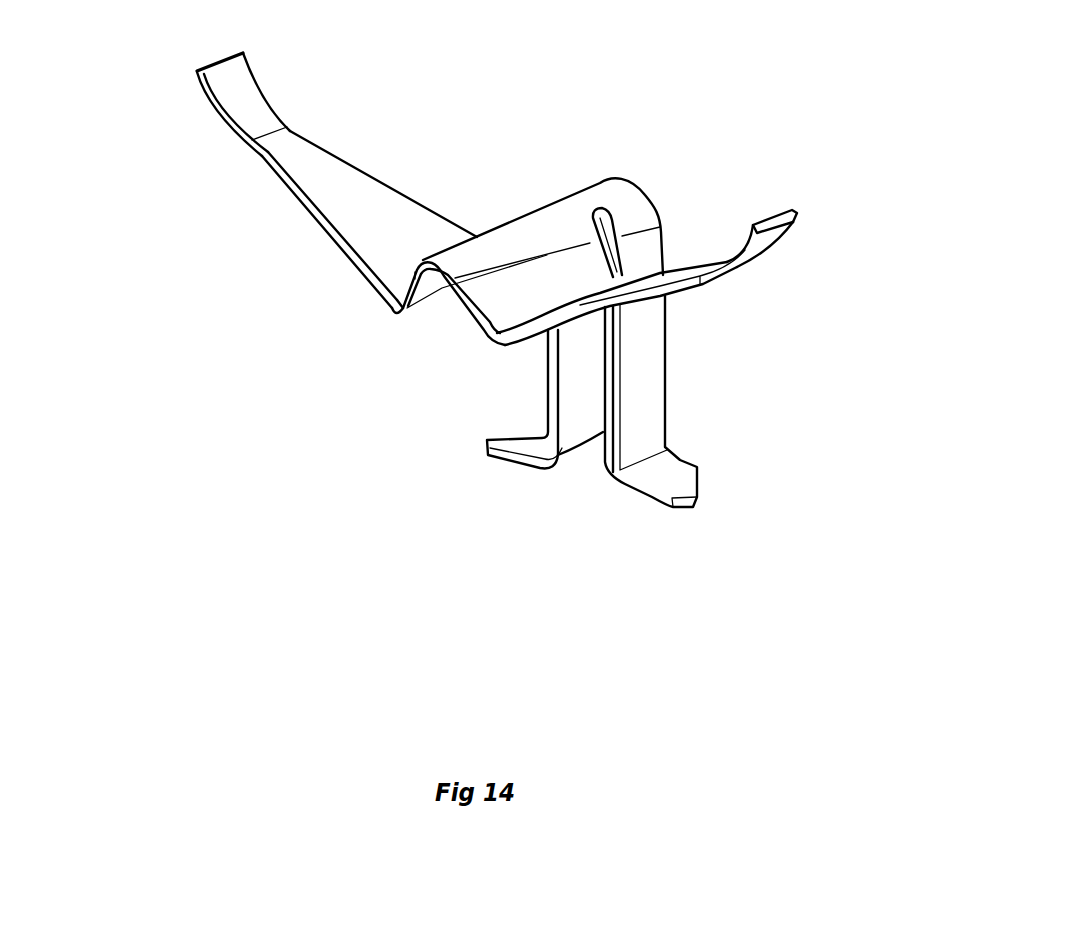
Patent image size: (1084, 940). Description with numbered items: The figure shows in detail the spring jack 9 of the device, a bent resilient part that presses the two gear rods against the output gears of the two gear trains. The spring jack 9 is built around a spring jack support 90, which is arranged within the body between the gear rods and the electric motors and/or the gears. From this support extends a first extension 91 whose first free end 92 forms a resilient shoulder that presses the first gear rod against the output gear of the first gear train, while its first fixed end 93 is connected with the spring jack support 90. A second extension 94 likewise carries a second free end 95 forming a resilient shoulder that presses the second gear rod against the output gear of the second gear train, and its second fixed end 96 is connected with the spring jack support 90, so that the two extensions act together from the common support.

The spring jack 9 is at (338, 513).
The spring jack support 90 is at (637, 333).
The first extension 91 is at (357, 222).
The first free end 92 is at (230, 75).
The first fixed end 93 is at (408, 277).
The second extension 94 is at (648, 275).
The second free end 95 is at (793, 227).
The second fixed end 96 is at (574, 257).